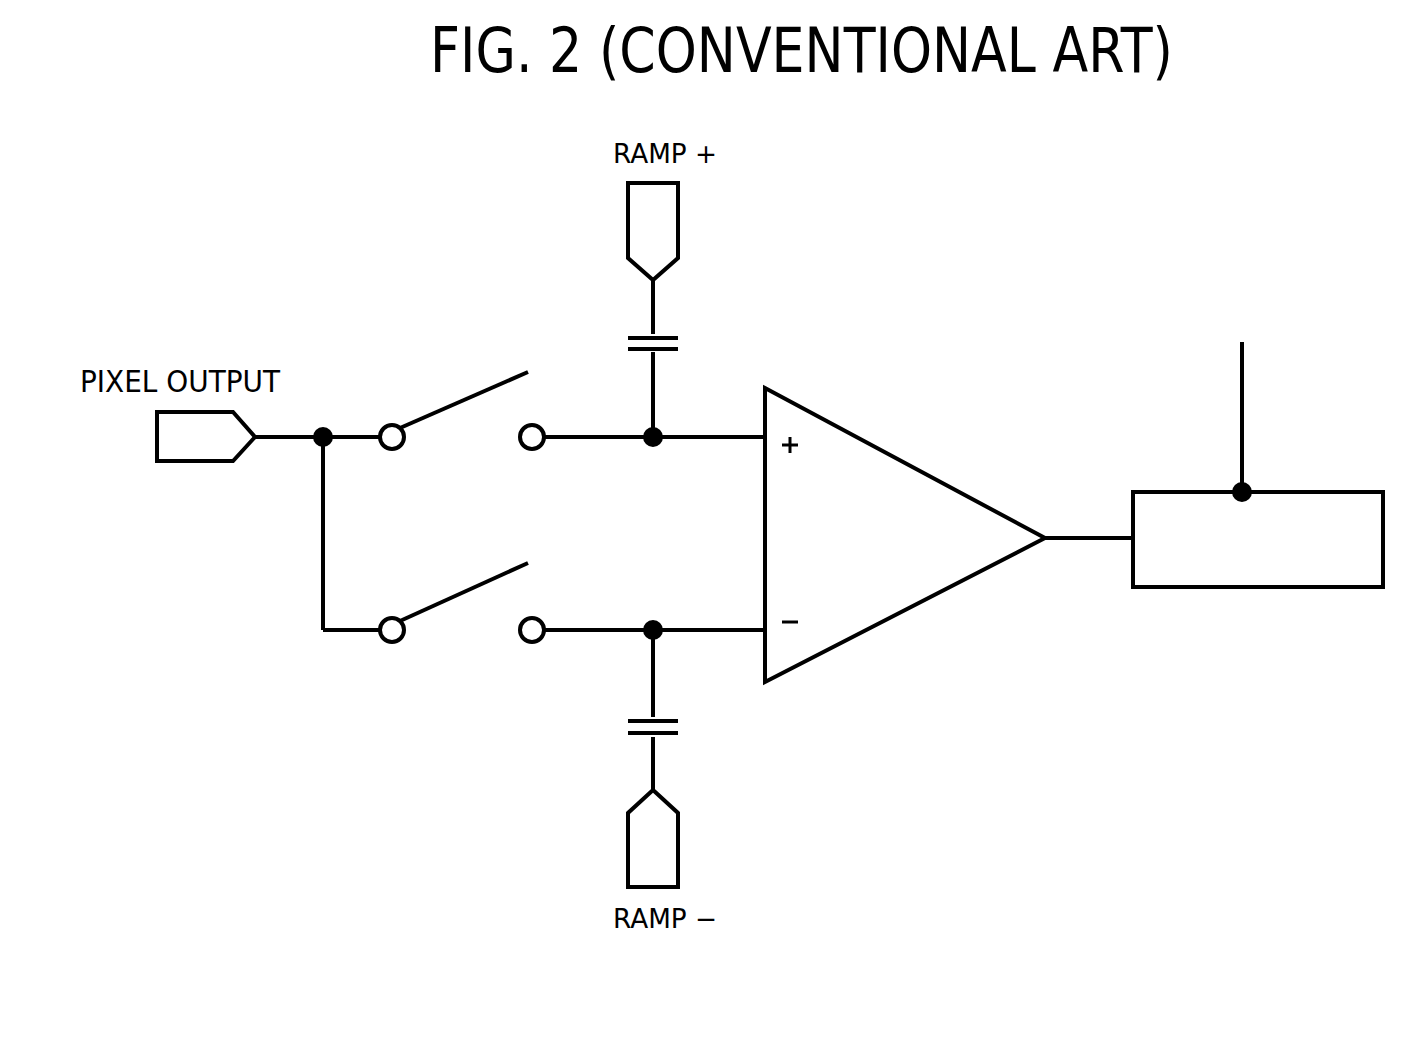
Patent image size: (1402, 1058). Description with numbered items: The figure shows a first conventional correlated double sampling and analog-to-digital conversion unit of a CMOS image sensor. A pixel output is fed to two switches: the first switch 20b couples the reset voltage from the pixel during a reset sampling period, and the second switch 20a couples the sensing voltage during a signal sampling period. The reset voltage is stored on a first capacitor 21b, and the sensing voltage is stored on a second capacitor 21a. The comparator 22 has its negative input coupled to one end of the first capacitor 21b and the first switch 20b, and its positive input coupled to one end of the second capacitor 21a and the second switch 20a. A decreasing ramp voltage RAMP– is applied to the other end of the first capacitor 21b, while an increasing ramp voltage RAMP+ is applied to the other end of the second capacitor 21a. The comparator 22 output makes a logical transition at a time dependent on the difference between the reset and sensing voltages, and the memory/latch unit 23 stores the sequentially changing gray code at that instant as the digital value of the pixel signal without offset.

The second switch 20a is at (458, 397).
The first switch 20b is at (462, 592).
The second capacitor 21a is at (660, 333).
The first capacitor 21b is at (660, 735).
The comparator 22 is at (903, 462).
The memory/latch unit 23 is at (1310, 490).